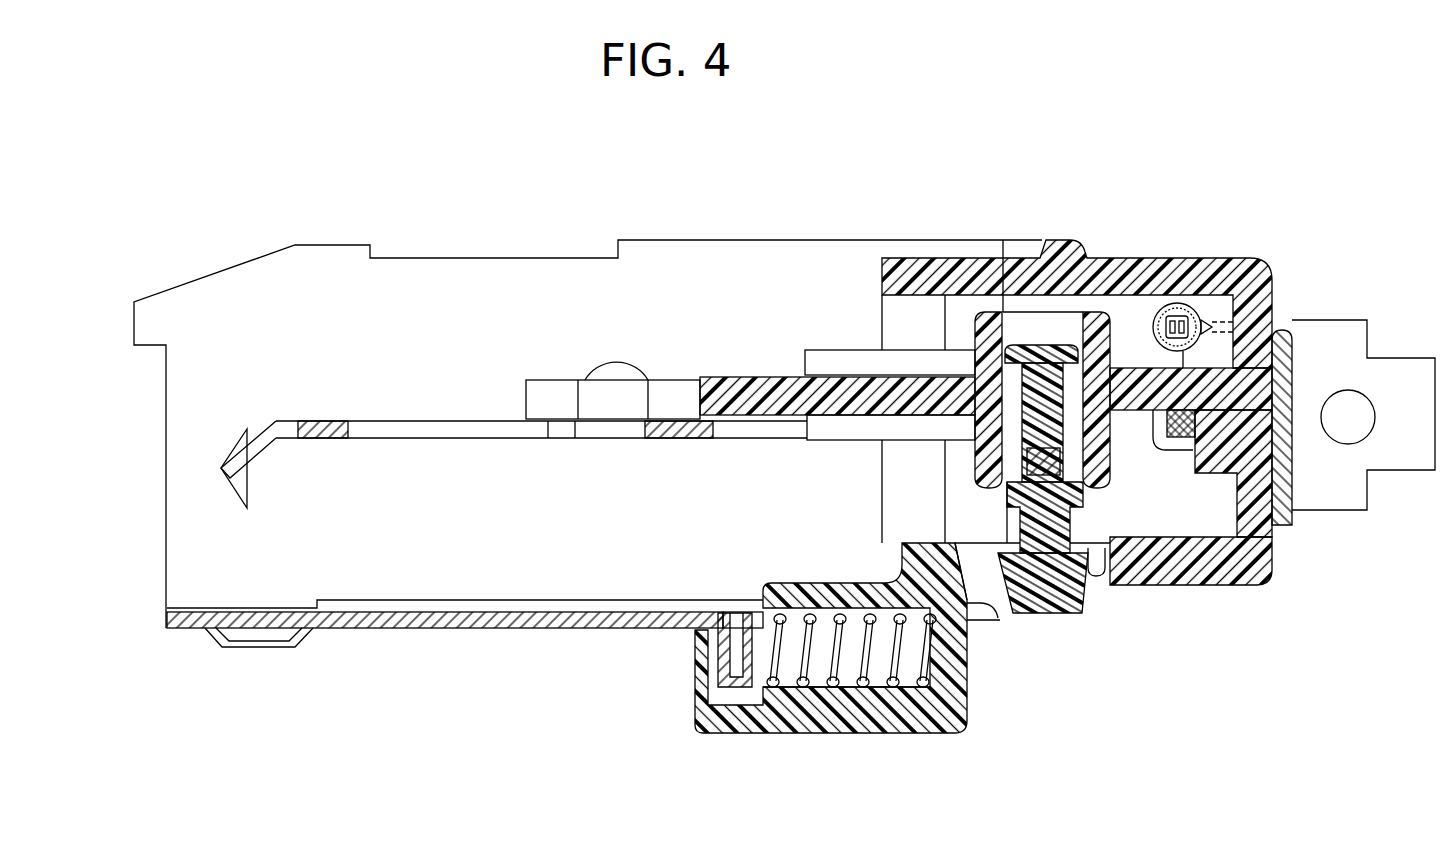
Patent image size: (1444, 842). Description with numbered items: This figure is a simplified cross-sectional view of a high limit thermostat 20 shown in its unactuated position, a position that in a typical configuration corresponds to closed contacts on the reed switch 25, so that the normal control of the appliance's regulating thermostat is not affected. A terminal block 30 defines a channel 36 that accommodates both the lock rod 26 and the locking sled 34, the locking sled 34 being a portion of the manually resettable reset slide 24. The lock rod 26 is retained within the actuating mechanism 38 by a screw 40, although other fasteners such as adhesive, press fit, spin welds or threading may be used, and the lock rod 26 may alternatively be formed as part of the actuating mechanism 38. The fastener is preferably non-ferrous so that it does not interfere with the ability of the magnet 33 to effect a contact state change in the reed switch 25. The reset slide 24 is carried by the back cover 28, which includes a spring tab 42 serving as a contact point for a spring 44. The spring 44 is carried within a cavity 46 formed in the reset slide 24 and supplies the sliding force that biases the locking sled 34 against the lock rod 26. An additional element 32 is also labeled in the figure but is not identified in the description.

The high limit thermostat 20 is at (1140, 101).
The reset slide 24 is at (940, 735).
The reed switch 25 is at (1163, 305).
The lock rod 26 is at (1040, 610).
The back cover 28 is at (445, 630).
The terminal block 30 is at (1096, 258).
The retaining clip 32 is at (1098, 565).
The magnet 33 is at (1178, 447).
The locking sled 34 is at (968, 548).
The channel 36 is at (1102, 535).
The actuating mechanism 38 is at (1192, 387).
The screw 40 is at (1031, 345).
The spring tab 42 is at (723, 648).
The spring 44 is at (843, 688).
The cavity 46 is at (918, 650).